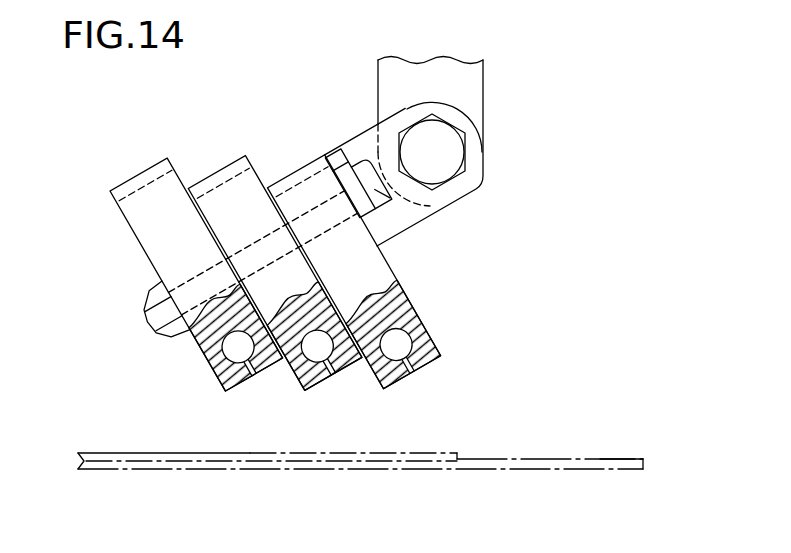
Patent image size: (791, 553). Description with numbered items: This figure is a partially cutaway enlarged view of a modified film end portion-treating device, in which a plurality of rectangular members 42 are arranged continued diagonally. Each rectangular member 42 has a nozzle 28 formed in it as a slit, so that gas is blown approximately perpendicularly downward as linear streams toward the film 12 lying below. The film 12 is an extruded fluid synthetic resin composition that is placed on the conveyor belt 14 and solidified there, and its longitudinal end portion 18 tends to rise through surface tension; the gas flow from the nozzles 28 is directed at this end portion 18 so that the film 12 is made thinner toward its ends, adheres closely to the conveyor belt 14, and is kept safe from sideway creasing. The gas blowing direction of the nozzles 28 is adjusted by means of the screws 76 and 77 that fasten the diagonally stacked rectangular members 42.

The film 12 is at (137, 449).
The conveyor belt 14 is at (612, 458).
The end portion 18 is at (457, 452).
The nozzle 28 is at (254, 376).
The rectangular member 42 is at (129, 180).
The screw 76 is at (358, 156).
The screw 77 is at (452, 146).